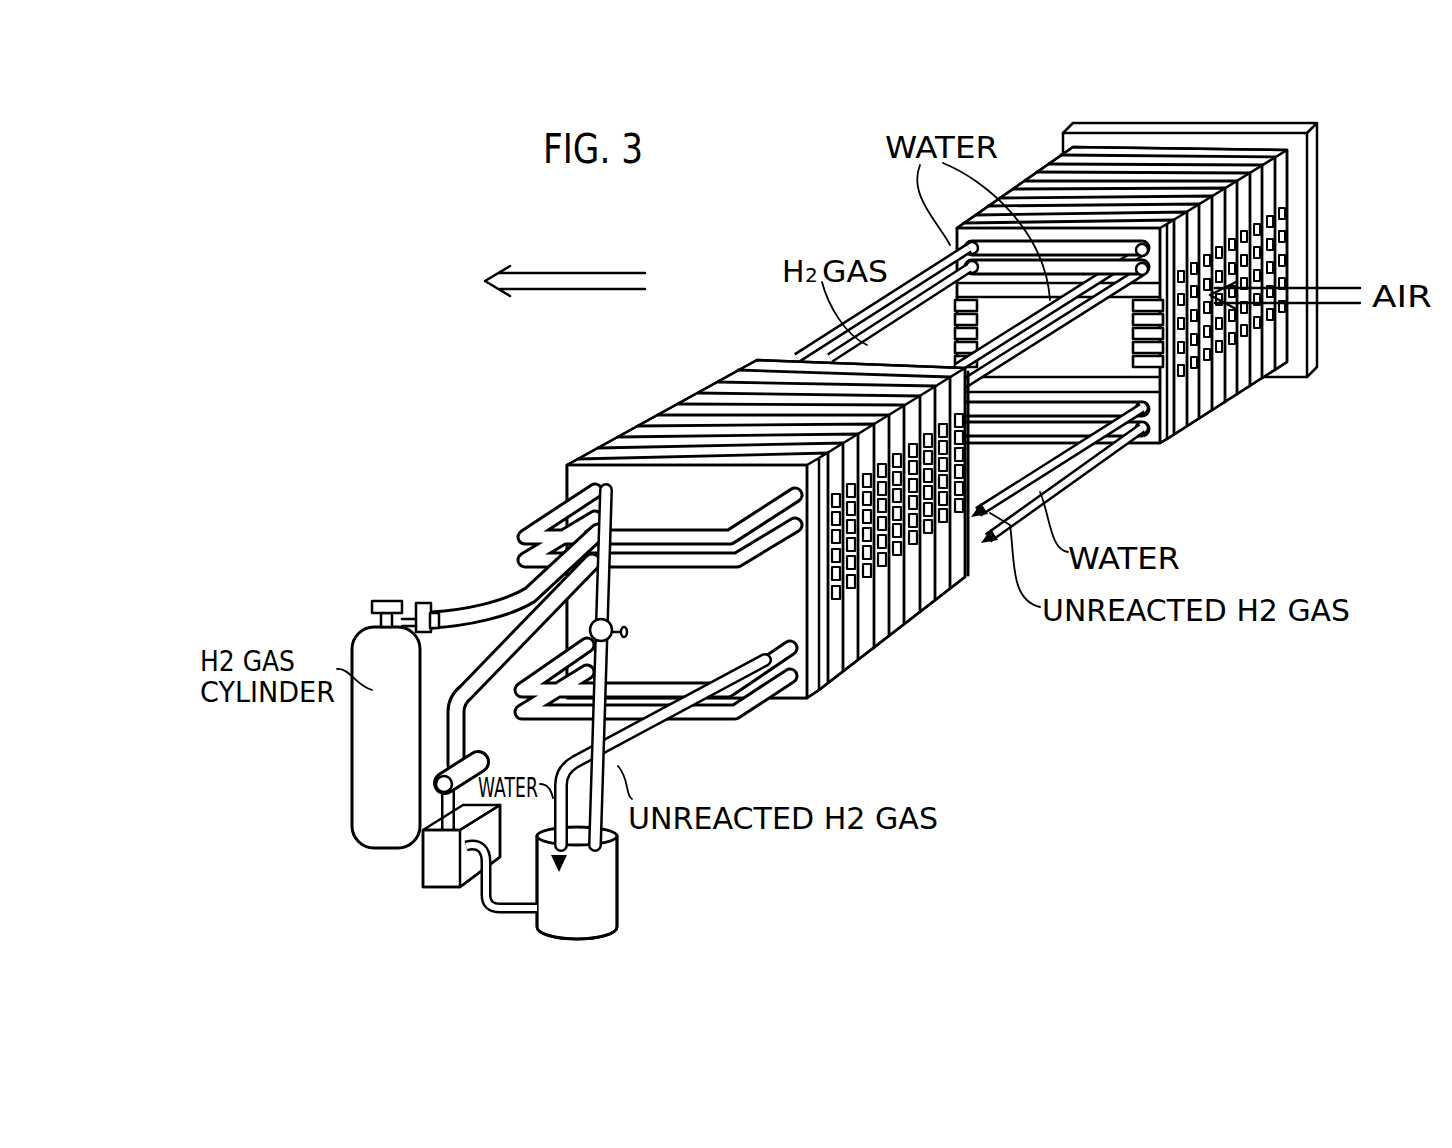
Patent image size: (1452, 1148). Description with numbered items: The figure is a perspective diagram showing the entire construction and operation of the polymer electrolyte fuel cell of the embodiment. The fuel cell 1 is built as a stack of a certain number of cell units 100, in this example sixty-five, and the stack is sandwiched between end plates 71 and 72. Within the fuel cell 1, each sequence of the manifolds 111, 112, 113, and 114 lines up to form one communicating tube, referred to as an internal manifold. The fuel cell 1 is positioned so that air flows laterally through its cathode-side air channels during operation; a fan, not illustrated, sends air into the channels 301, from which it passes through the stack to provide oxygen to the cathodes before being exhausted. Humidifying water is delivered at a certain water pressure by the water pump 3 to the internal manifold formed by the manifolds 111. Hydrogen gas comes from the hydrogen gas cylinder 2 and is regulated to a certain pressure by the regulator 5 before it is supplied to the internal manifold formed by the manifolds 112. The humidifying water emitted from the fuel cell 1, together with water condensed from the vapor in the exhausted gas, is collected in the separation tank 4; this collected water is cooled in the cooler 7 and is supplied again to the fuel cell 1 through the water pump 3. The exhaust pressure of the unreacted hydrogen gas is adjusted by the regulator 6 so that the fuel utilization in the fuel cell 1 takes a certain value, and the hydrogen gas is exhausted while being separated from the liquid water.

The fuel cell 1 is at (1098, 345).
The cell unit 100 is at (745, 494).
The end plate 71 is at (590, 462).
The end plate 72 is at (1318, 153).
The channels 301 is at (1265, 246).
The manifold 111 is at (964, 246).
The manifold 112 is at (1128, 298).
The manifold 113 is at (1140, 385).
The manifold 114 is at (1143, 434).
The hydrogen gas cylinder 2 is at (363, 768).
The water pump 3 is at (480, 760).
The separation tank 4 is at (607, 883).
The regulator 5 is at (433, 610).
The regulator 6 is at (628, 632).
The cooler 7 is at (435, 862).